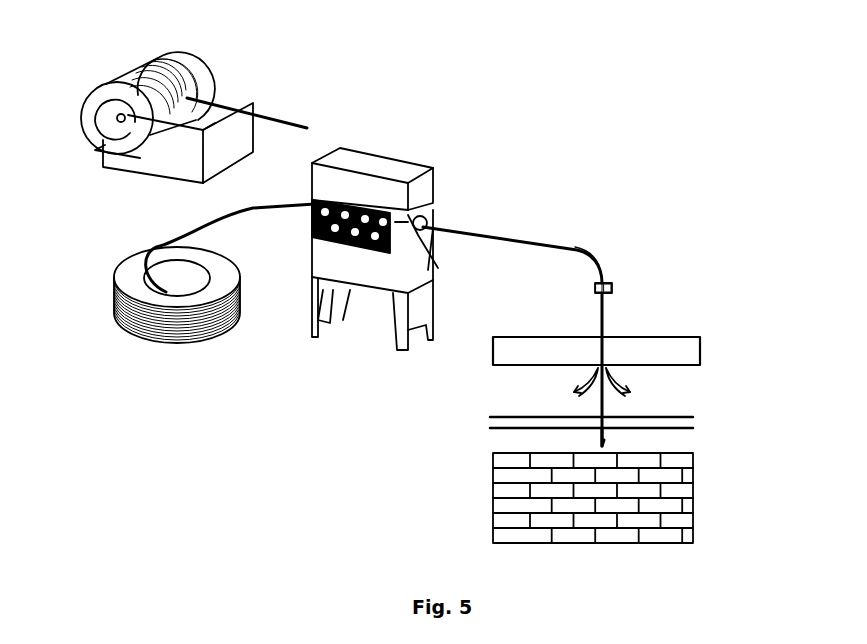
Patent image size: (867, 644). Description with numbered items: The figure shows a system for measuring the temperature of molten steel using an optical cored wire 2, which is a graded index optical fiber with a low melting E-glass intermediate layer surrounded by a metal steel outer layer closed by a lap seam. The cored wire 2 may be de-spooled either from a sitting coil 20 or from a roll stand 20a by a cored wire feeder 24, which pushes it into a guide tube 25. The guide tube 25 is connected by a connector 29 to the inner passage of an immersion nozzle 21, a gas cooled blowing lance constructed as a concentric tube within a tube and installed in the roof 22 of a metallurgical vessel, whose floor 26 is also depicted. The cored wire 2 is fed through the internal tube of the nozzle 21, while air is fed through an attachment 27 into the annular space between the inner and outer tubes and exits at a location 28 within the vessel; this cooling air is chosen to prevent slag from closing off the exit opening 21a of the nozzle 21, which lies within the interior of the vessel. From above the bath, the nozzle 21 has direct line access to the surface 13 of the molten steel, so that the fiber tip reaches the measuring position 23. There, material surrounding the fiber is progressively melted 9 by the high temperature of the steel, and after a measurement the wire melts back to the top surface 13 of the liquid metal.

The roll stand 20a is at (140, 66).
The sitting coil 20 is at (133, 255).
The optical cored wire 2 is at (528, 243).
The cored wire feeder 24 is at (367, 163).
The guide tube 25 is at (593, 253).
The connector 29 is at (595, 286).
The attachment 27 is at (598, 293).
The immersion nozzle 21 is at (612, 289).
The roof 22 is at (695, 335).
The exit opening 21a is at (604, 372).
The air exit location 28 is at (633, 388).
The progressively melted material 9 is at (510, 417).
The top surface of the liquid metal 13 is at (502, 428).
The measuring position 23 is at (603, 432).
The floor 26 is at (517, 477).